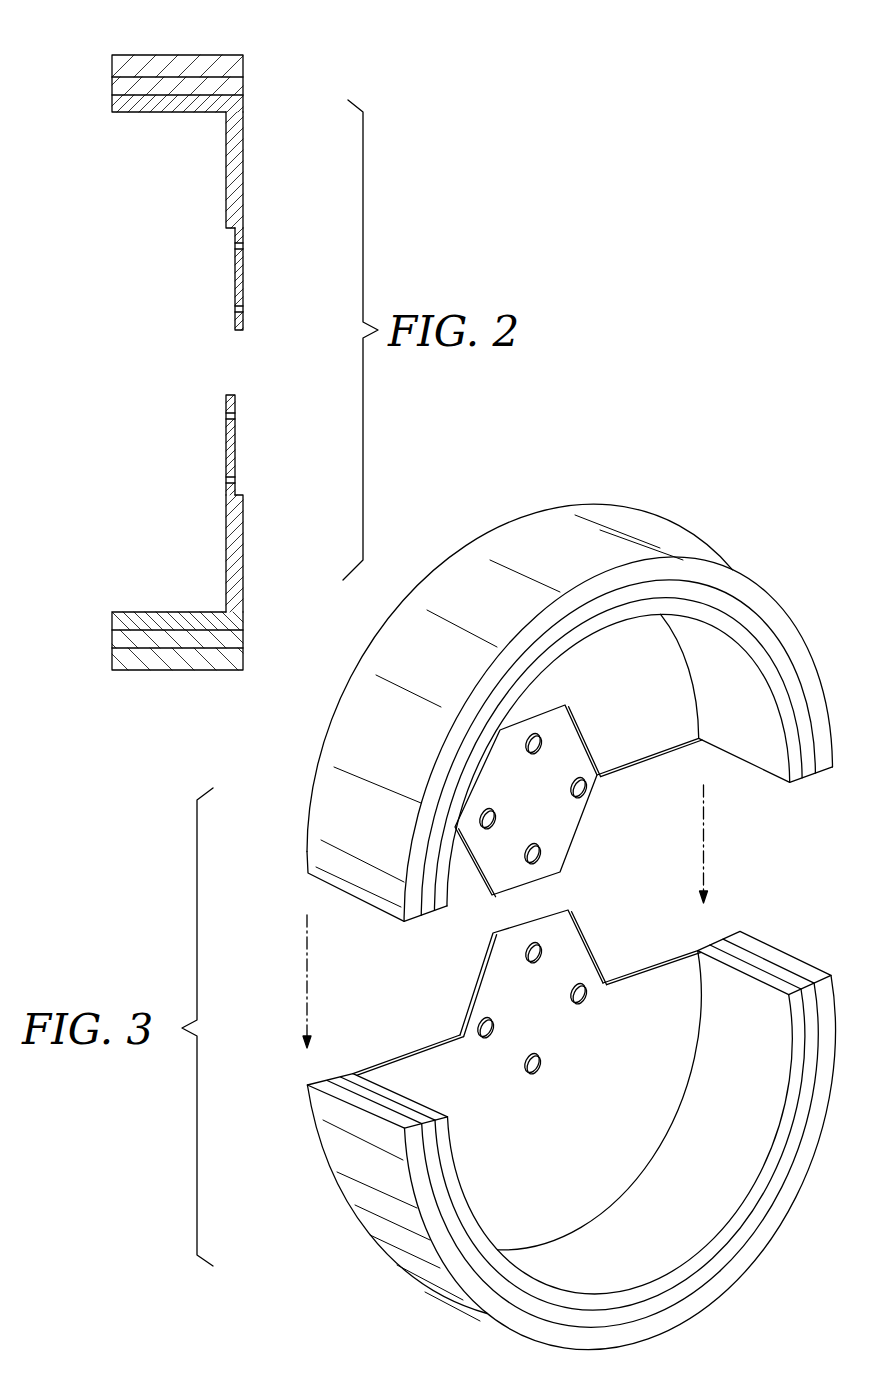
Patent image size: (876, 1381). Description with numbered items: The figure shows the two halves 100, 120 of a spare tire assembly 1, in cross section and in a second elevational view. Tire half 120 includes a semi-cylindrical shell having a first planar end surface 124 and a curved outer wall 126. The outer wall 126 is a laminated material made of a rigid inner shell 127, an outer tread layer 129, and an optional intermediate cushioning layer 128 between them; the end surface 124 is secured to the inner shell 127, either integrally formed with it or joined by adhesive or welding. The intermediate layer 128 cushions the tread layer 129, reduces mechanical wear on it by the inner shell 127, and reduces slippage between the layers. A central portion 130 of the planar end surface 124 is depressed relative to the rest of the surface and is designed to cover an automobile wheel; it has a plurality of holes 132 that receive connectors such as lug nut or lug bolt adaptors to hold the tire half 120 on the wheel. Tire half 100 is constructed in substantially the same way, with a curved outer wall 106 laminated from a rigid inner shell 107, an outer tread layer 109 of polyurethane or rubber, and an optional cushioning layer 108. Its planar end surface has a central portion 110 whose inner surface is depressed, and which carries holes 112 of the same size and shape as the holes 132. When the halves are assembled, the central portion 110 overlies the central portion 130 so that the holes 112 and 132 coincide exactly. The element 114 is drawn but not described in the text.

In FIG. 2, the spare tire assembly 1 is at (56, 302).
In FIG. 2, the tire half 100 is at (107, 272).
In FIG. 3, the tire half 100 is at (277, 887).
In FIG. 2, the tire half 120 is at (117, 465).
In FIG. 3, the tire half 120 is at (275, 1101).
In FIG. 2, the curved outer wall 106 is at (178, 55).
In FIG. 3, the curved outer wall 106 is at (523, 512).
In FIG. 2, the rigid inner shell 107 is at (112, 100).
In FIG. 3, the rigid inner shell 107 is at (447, 907).
In FIG. 2, the intermediate cushioning layer 108 is at (112, 80).
In FIG. 3, the intermediate cushioning layer 108 is at (432, 912).
In FIG. 2, the outer tread layer 109 is at (112, 62).
In FIG. 3, the outer tread layer 109 is at (416, 922).
In FIG. 2, the central portion 110 is at (243, 272).
In FIG. 3, the central portion 110 is at (585, 815).
In FIG. 2, the holes 112 is at (235, 245).
In FIG. 3, the holes 112 is at (583, 782).
In FIG. 2, the upper flange leg 114 is at (244, 165).
In FIG. 2, the first planar end surface 124 is at (243, 587).
In FIG. 3, the first planar end surface 124 is at (660, 960).
In FIG. 2, the curved outer wall 126 is at (155, 670).
In FIG. 2, the rigid inner shell 127 is at (112, 618).
In FIG. 3, the rigid inner shell 127 is at (724, 952).
In FIG. 2, the intermediate cushioning layer 128 is at (112, 636).
In FIG. 3, the intermediate cushioning layer 128 is at (753, 960).
In FIG. 2, the outer tread layer 129 is at (112, 654).
In FIG. 3, the outer tread layer 129 is at (793, 967).
In FIG. 2, the central portion 130 is at (235, 445).
In FIG. 3, the central portion 130 is at (587, 947).
In FIG. 2, the holes 132 is at (226, 413).
In FIG. 3, the holes 132 is at (540, 1060).